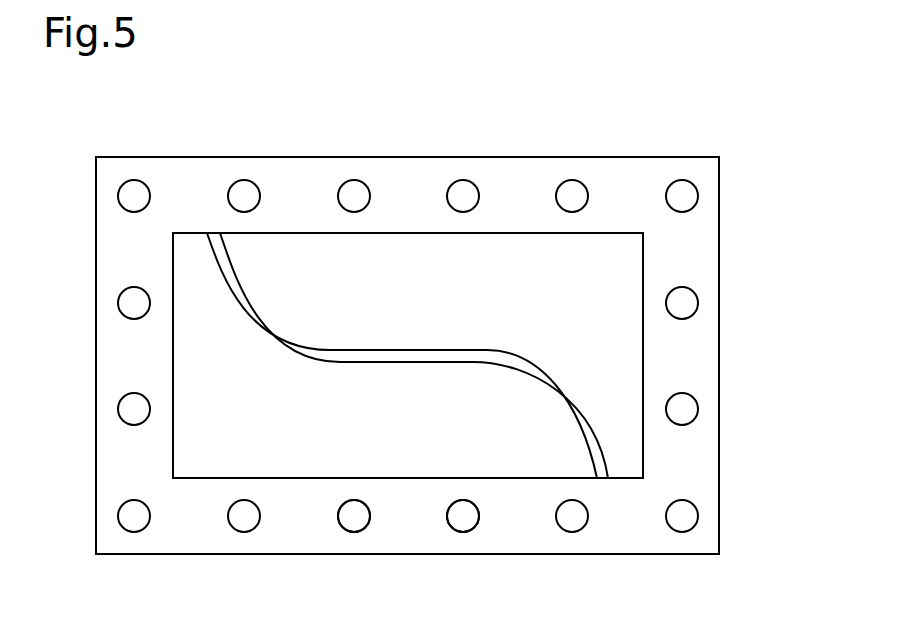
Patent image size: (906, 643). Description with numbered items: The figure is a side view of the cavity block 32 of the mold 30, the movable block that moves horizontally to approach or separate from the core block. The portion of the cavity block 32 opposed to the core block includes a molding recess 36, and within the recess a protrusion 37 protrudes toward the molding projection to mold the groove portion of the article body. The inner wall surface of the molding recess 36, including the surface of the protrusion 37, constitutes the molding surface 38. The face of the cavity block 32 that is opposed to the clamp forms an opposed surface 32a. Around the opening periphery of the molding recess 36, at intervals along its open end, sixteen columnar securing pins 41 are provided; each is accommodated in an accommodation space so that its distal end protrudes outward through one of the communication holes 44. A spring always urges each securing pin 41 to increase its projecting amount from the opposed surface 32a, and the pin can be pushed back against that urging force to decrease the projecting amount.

The cavity block 32 is at (407, 157).
The mold 30 is at (407, 355).
The opposed surface 32a is at (708, 475).
The molding recess 36 is at (643, 277).
The protrusion 37 is at (383, 350).
The molding surface 38 is at (622, 368).
The securing pins 41 is at (461, 510).
The communication holes 44 is at (455, 525).